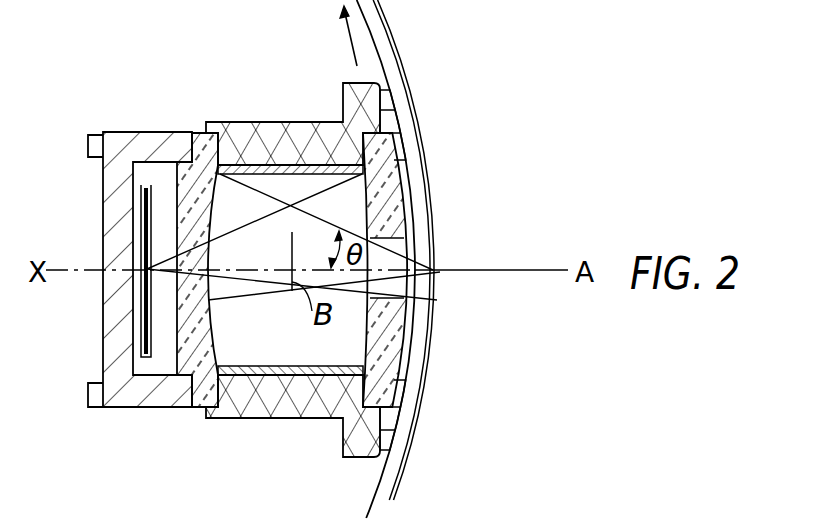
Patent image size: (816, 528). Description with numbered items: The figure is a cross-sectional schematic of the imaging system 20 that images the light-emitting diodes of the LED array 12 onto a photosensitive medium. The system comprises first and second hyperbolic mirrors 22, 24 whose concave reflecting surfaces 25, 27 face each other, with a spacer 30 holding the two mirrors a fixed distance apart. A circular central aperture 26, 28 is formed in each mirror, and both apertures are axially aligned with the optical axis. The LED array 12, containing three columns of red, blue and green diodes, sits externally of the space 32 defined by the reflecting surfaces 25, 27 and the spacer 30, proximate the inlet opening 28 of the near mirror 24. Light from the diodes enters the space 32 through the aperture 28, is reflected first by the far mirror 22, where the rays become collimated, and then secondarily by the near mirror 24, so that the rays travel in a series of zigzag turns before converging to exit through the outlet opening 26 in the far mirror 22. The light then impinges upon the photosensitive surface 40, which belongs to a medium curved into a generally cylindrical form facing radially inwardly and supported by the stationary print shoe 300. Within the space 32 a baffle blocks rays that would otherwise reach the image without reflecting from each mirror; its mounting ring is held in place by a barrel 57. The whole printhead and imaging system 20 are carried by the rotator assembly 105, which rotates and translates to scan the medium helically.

The LED array 12 is at (137, 337).
The central aperture of second mirror 28 is at (180, 287).
The second hyperbolic mirror 24 is at (190, 177).
The concave reflecting surface of second mirror 27 is at (236, 178).
The spacer 30 is at (312, 167).
The barrel 57 is at (272, 396).
The concave reflecting surface of first mirror 25 is at (423, 157).
The first hyperbolic mirror 22 is at (376, 189).
The central aperture of first mirror 26 is at (398, 286).
The imaging system 20 is at (397, 222).
The space 32 is at (283, 350).
The rotator assembly 105 is at (384, 464).
The print shoe 300 is at (418, 437).
The photosensitive surface 40 is at (428, 384).